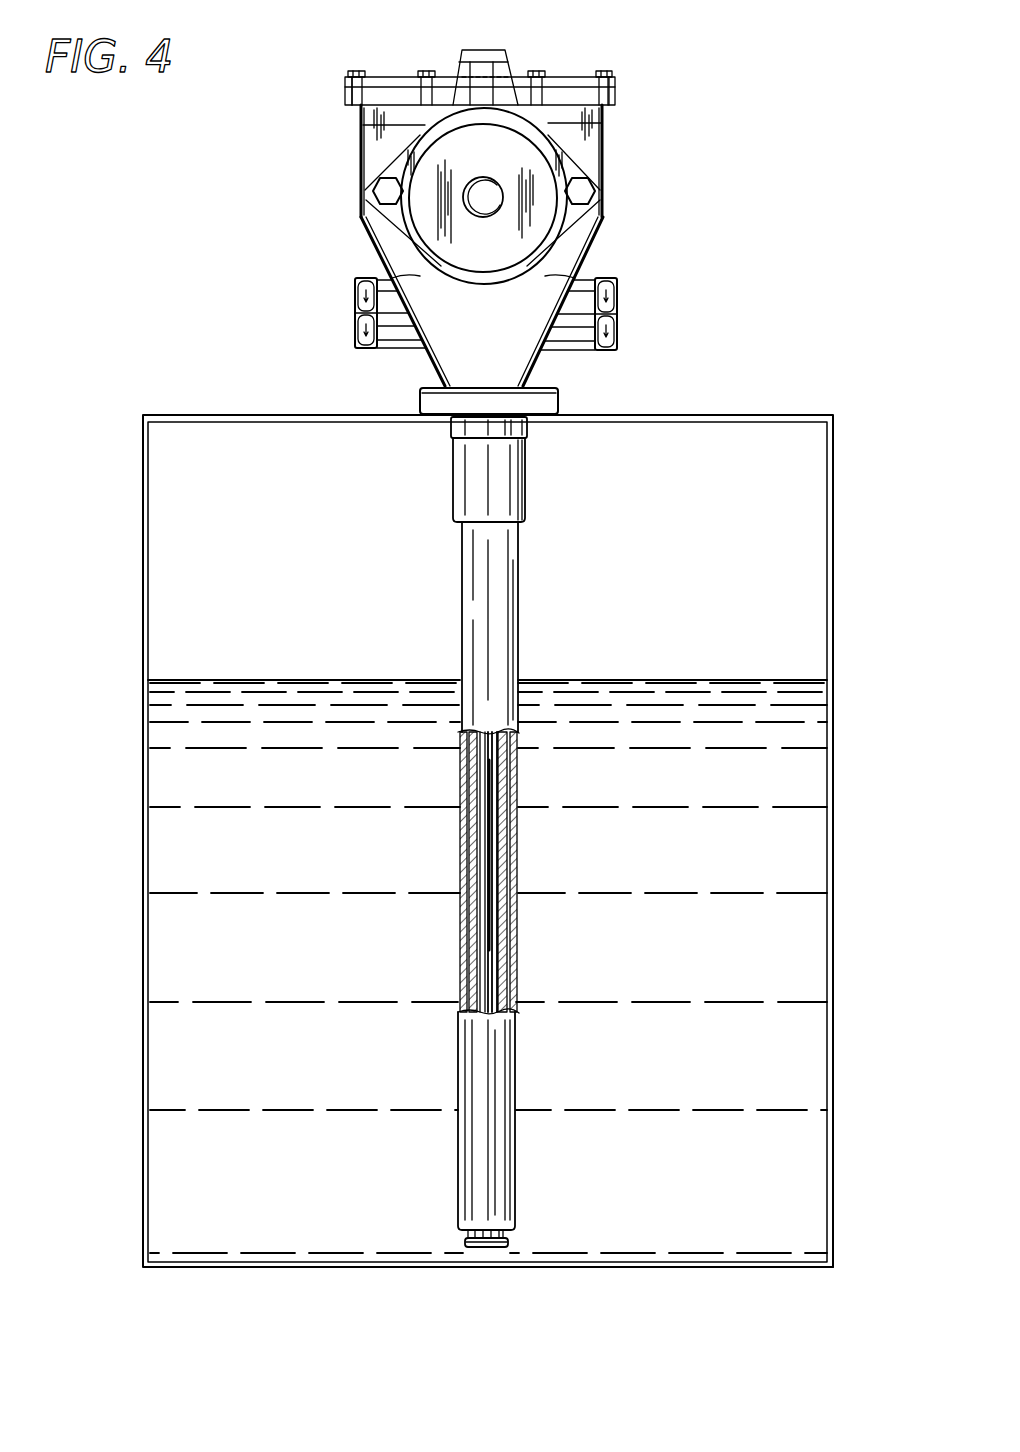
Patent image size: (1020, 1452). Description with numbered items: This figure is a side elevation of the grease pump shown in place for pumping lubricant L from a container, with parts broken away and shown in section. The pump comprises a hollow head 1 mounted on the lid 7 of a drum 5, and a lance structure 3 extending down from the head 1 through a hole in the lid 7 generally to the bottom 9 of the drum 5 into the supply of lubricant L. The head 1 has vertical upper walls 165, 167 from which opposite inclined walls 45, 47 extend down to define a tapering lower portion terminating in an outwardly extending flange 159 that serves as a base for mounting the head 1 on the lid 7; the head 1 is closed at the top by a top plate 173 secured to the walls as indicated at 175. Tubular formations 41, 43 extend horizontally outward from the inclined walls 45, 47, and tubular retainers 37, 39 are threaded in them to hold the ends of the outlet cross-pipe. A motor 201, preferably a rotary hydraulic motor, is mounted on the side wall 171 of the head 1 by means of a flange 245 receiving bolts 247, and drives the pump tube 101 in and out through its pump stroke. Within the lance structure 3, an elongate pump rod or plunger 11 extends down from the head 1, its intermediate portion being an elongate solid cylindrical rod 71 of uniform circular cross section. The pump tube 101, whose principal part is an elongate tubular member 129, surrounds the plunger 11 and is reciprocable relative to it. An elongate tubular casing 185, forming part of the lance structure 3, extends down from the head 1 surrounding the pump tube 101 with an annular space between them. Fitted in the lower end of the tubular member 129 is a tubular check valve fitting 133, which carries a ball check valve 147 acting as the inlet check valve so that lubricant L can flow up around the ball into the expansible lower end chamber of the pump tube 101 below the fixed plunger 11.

The head 1 is at (652, 94).
The lance structure 3 is at (458, 596).
The drum 5 is at (140, 800).
The lid 7 is at (687, 413).
The bottom 9 is at (520, 1268).
The pump rod or plunger 11 is at (468, 840).
The tubular retainer 37 is at (355, 335).
The tubular retainer 39 is at (617, 330).
The tubular formation 41 is at (413, 348).
The tubular formation 43 is at (570, 347).
The inclined wall 45 is at (378, 252).
The inclined wall 47 is at (593, 257).
The plunger member or rod 71 is at (475, 865).
The pump tube 101 is at (456, 930).
The tubular member 129 is at (462, 958).
The check valve fitting 133 is at (465, 1243).
The ball check valve 147 is at (453, 497).
The flange 159 is at (420, 402).
The vertical upper wall 165 is at (360, 168).
The vertical upper wall 167 is at (606, 173).
The side wall 171 is at (604, 123).
The top plate 173 is at (583, 70).
The fasteners 175 is at (425, 70).
The tubular casing 185 is at (520, 963).
The motor 201 is at (532, 163).
The flange 245 is at (360, 132).
The bolts 247 is at (606, 197).
The lubricant L is at (302, 680).